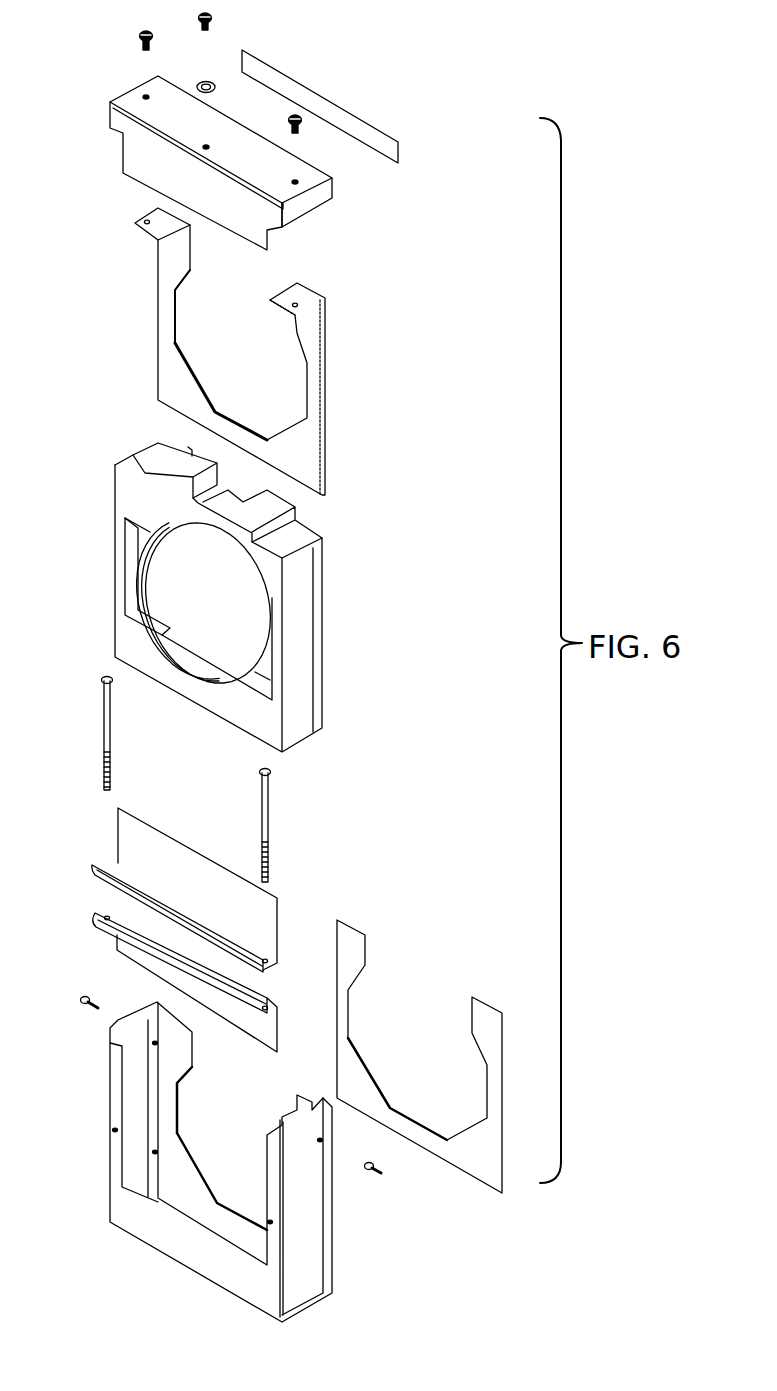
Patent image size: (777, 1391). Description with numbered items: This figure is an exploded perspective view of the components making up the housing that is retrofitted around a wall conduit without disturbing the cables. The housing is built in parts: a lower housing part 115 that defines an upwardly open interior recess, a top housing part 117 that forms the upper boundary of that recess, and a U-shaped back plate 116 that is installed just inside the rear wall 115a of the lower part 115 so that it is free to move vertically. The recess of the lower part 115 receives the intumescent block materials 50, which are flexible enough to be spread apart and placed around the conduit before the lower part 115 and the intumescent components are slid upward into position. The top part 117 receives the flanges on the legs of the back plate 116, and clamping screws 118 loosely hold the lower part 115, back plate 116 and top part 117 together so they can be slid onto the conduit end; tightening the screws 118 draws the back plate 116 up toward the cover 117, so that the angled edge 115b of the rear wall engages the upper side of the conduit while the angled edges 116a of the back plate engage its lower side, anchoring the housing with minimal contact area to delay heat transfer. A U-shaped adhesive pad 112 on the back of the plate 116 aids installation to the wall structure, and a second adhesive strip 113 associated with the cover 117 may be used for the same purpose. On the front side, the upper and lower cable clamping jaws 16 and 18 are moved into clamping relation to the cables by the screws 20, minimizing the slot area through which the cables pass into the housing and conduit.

The upper cable clamping jaw 16 is at (125, 833).
The lower cable clamping jaw 18 is at (102, 915).
The screw 20 is at (105, 730).
The intumescent block materials 50 is at (86, 598).
The U-shaped adhesive pad 112 is at (472, 1158).
The second adhesive strip 113 is at (315, 108).
The lower housing part 115 is at (125, 1200).
The rear wall 115a is at (230, 1170).
The angled edge 115b is at (180, 1075).
The back plate 116 is at (168, 345).
The angled edge 116a is at (292, 427).
The top housing part 117 is at (152, 113).
The clamping screw 118 is at (145, 32).